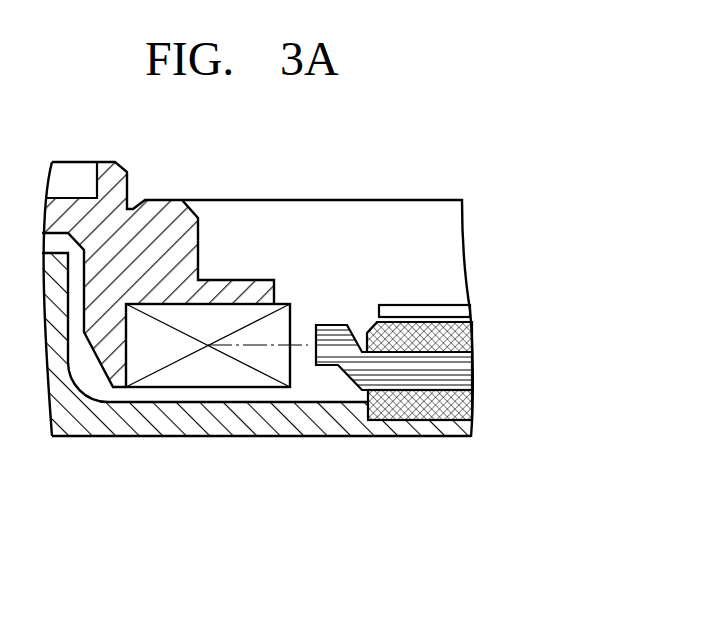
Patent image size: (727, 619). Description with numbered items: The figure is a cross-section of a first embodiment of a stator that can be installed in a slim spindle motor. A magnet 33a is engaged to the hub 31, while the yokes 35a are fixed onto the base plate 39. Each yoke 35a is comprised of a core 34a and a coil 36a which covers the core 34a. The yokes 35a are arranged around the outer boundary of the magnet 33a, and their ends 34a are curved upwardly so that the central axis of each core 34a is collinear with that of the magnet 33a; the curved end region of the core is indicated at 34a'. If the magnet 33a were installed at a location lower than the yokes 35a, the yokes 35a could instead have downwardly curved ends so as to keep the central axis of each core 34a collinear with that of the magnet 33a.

The hub 31 is at (163, 215).
The base plate 39 is at (132, 427).
The magnet 33a is at (223, 377).
The core 34a is at (439, 357).
The stator core tooth 34a' is at (326, 414).
The coil 36a is at (470, 332).
The yoke 35a is at (567, 320).